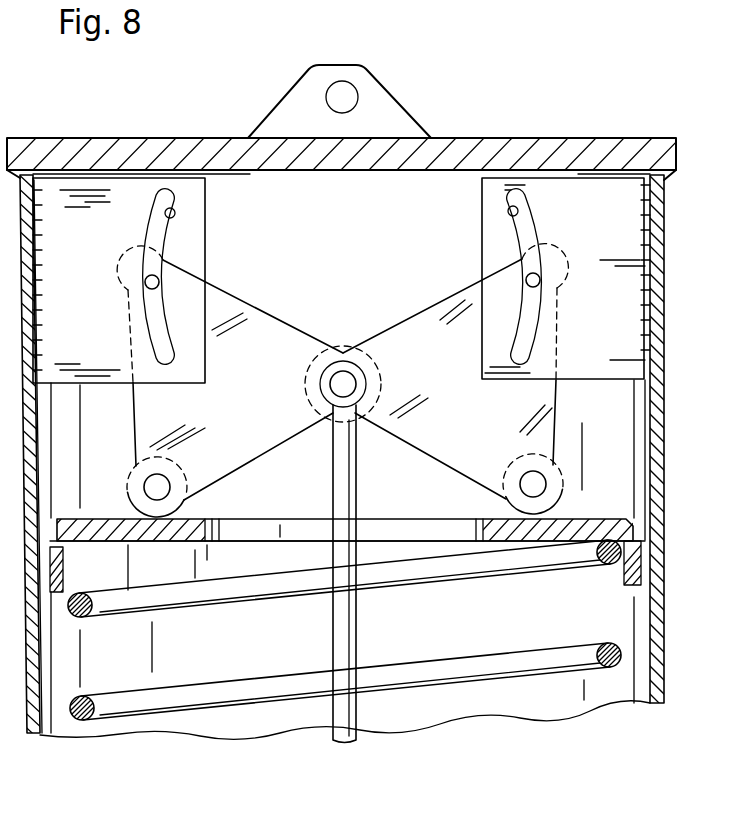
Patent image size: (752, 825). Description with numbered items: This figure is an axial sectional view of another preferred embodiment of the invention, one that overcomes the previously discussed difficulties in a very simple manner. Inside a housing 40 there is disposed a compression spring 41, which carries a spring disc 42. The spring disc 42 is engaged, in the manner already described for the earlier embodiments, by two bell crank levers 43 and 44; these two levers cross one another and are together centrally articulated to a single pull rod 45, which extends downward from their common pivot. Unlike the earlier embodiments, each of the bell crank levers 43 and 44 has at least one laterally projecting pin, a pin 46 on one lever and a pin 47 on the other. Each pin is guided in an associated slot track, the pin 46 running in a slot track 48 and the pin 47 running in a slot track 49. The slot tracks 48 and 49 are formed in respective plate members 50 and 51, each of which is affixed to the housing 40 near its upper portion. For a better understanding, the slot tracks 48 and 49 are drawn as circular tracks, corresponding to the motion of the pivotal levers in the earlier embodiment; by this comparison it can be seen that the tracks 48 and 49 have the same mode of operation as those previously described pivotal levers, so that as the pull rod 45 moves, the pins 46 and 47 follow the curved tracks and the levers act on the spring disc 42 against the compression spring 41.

The housing 40 is at (659, 703).
The compression spring 41 is at (430, 677).
The spring disc 42 is at (603, 518).
The bell crank lever 43 is at (260, 395).
The bell crank lever 44 is at (448, 388).
The pull rod 45 is at (341, 738).
The pin 46 is at (145, 283).
The pin 47 is at (541, 282).
The slot track 48 is at (174, 214).
The slot track 49 is at (509, 212).
The plate member 50 is at (84, 253).
The plate member 51 is at (612, 225).